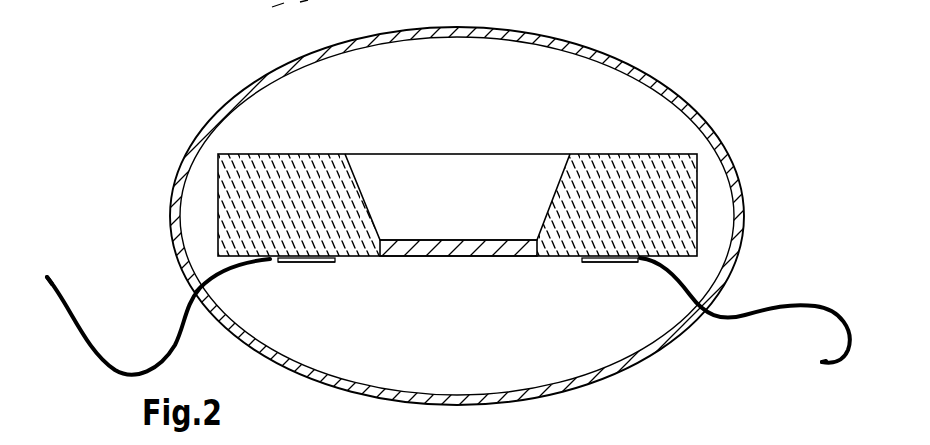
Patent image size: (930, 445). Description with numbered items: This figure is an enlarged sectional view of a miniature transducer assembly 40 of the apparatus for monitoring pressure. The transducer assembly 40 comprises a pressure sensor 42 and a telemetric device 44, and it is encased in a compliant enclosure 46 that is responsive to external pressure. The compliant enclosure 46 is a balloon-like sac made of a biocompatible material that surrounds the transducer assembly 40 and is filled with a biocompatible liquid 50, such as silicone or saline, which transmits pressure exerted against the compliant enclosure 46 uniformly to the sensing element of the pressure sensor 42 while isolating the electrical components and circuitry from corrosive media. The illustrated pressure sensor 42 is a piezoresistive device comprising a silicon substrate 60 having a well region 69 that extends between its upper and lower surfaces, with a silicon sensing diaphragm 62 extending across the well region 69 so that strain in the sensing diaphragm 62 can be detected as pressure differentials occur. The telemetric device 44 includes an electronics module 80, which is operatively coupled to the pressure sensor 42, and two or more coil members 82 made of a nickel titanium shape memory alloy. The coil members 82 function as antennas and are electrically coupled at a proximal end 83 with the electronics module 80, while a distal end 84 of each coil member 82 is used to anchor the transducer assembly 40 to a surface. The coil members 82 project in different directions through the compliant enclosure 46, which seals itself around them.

The transducer assembly 40 is at (138, 165).
The pressure sensor 42 is at (228, 197).
The telemetric device 44 is at (602, 290).
The compliant enclosure 46 is at (693, 115).
The liquid 50 is at (617, 107).
The substrate 60 is at (203, 220).
The sensing diaphragm 62 is at (400, 248).
The well region 69 is at (465, 208).
The electronics module 80 is at (298, 262).
The coil members 82 is at (116, 377).
The proximal end 83 is at (256, 262).
The distal end 84 is at (58, 283).